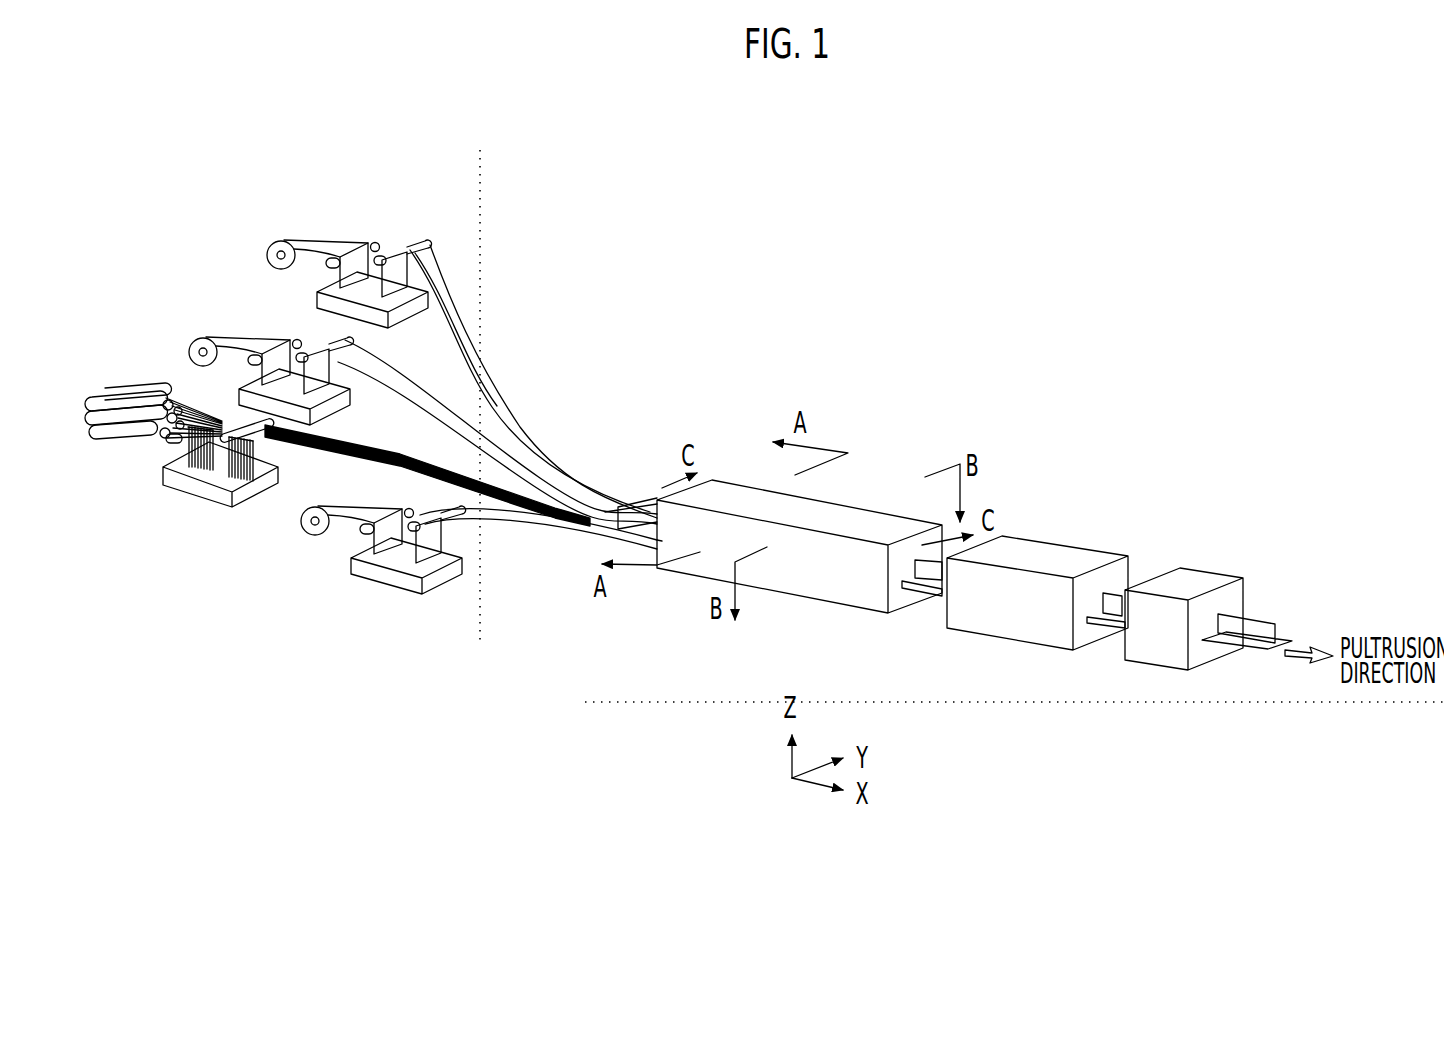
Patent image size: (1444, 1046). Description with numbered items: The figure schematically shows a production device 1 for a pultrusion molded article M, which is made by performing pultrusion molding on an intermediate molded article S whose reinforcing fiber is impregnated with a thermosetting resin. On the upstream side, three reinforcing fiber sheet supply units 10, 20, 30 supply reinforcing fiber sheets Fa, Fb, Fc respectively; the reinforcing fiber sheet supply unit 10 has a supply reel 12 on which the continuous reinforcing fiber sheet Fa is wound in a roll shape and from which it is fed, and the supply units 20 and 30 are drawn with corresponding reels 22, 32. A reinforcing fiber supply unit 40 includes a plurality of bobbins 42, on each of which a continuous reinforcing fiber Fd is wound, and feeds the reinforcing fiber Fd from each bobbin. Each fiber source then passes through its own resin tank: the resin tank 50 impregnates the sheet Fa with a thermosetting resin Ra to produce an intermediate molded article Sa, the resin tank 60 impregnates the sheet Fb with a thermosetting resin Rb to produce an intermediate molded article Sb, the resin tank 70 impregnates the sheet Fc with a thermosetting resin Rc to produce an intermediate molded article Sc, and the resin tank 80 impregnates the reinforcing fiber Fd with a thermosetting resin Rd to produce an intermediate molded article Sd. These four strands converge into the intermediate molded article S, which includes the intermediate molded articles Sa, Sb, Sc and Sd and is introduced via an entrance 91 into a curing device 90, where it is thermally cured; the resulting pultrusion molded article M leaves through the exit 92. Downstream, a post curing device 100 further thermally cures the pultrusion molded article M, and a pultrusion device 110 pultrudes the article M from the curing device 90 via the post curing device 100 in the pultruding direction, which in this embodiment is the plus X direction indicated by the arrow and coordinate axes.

The production device 1 is at (936, 257).
The reinforcing fiber sheet supply unit 10 is at (331, 272).
The supply reel 12 is at (268, 252).
The reinforcing fiber sheet Fa is at (345, 242).
The thermosetting resin Ra is at (320, 302).
The resin tank 50 is at (425, 306).
The reinforcing fiber sheet supply unit 20 is at (262, 357).
The second sheet reel 22 is at (192, 346).
The reinforcing fiber sheet Fb is at (262, 330).
The thermosetting resin Rb is at (338, 415).
The resin tank 60 is at (240, 393).
The reinforcing fiber sheet supply unit 30 is at (367, 553).
The third sheet reel 32 is at (314, 536).
The reinforcing fiber sheet Fc is at (368, 508).
The thermosetting resin Rc is at (402, 562).
The resin tank 70 is at (448, 574).
The reinforcing fiber supply unit 40 is at (179, 446).
The bobbins 42 is at (160, 405).
The reinforcing fiber Fd is at (195, 420).
The thermosetting resin Rd is at (209, 472).
The resin tank 80 is at (258, 494).
The intermediate molded article Sa is at (478, 355).
The intermediate molded article Sb is at (442, 425).
The intermediate molded article Sc is at (502, 517).
The intermediate molded article Sd is at (384, 450).
The intermediate molded article S is at (650, 519).
The curing device 90 is at (864, 503).
The entrance 91 is at (648, 551).
The exit 92 is at (904, 598).
The post curing device 100 is at (1062, 543).
The pultrusion molded article M is at (1112, 605).
The pultrusion device 110 is at (1205, 570).